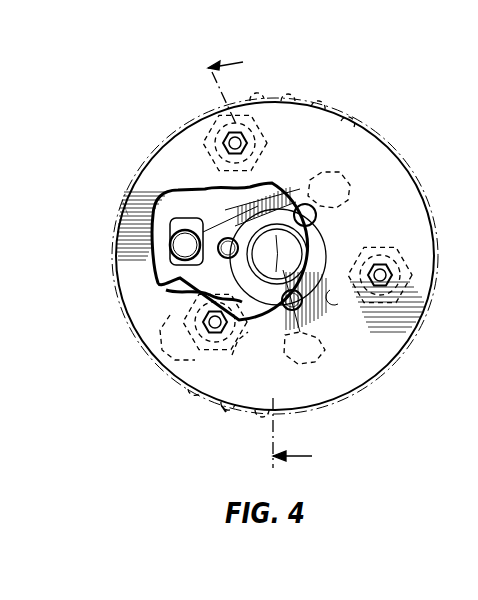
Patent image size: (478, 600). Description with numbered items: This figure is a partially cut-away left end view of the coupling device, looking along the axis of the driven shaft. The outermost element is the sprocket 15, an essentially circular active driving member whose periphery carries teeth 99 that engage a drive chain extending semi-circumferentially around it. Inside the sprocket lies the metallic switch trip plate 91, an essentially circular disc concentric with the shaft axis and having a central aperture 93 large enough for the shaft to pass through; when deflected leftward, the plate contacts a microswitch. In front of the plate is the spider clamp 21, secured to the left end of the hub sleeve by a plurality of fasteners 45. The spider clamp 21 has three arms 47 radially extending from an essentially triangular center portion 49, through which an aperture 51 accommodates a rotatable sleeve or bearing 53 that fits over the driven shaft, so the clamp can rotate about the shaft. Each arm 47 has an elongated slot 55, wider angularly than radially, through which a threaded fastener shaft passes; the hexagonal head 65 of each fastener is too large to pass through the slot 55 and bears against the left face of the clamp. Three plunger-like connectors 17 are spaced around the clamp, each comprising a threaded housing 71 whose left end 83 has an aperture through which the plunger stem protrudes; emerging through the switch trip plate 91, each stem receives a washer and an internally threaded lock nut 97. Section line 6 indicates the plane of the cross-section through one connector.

The section line 6- 6 is at (271, 253).
The sprocket 15 is at (395, 152).
The plunger-like connector 17 is at (264, 150).
The spider clamp 21 is at (340, 303).
The fastener 45 is at (227, 238).
The arm 47 is at (189, 217).
The center portion 49 is at (226, 342).
The aperture 51 is at (310, 254).
The bearing 53 is at (317, 216).
The slot 55 is at (186, 262).
The head 65 is at (170, 246).
The housing 71 is at (210, 118).
The left end 83 is at (262, 93).
The switch trip plate 91 is at (126, 179).
The central aperture 93 is at (258, 184).
The lock nut 97 is at (428, 316).
The teeth 99 is at (226, 412).